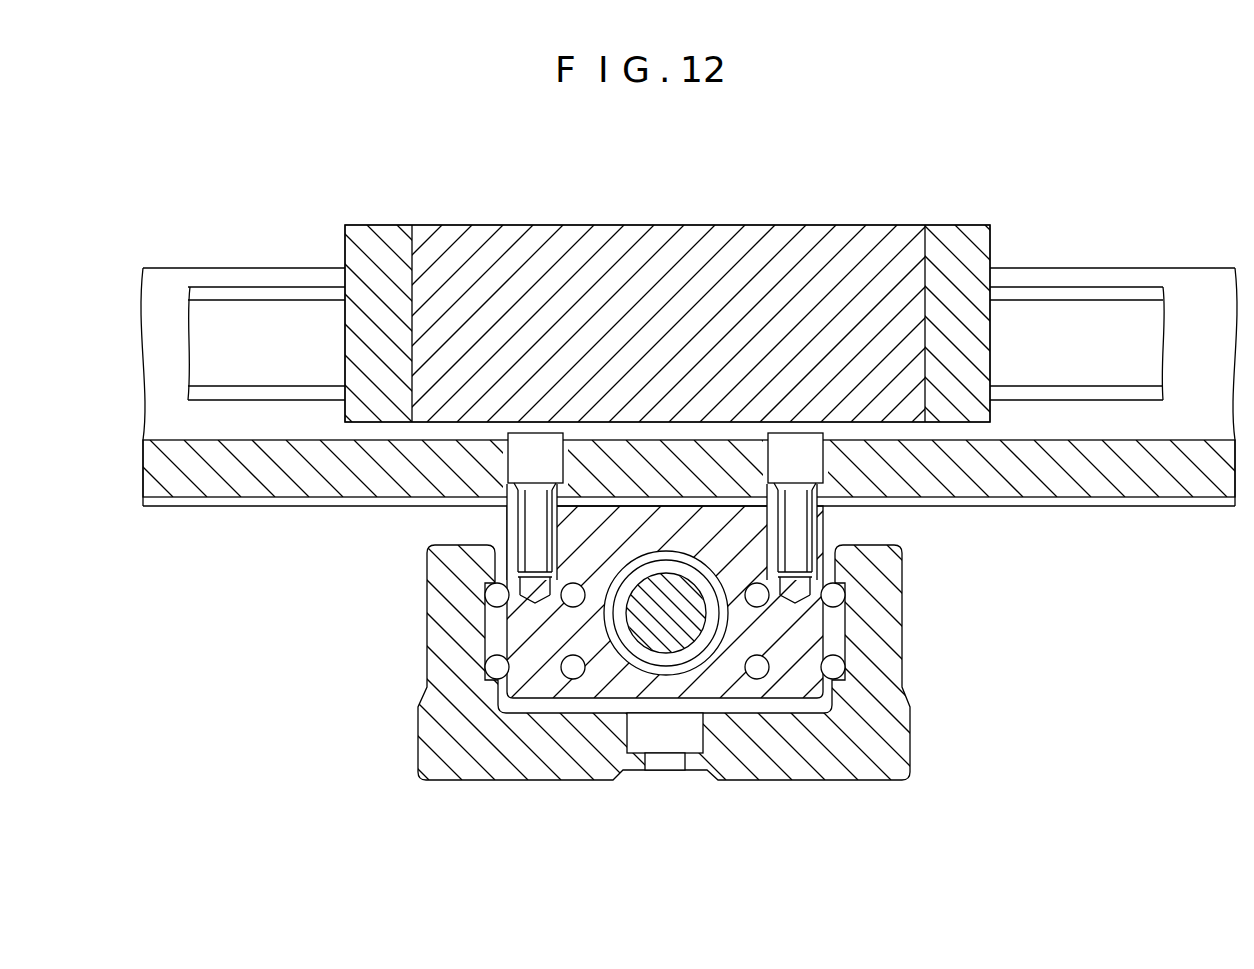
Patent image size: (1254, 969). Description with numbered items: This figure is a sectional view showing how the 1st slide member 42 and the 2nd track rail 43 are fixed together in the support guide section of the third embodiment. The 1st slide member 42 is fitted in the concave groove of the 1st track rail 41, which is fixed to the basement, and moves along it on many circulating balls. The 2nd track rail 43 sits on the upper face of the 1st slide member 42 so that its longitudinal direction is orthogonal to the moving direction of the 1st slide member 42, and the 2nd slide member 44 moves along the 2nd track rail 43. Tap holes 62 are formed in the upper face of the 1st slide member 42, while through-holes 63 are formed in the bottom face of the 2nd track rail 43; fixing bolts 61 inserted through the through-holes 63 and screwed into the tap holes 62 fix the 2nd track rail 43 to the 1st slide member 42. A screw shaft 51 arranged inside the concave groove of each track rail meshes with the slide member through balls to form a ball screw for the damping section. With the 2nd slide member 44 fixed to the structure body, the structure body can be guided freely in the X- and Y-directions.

The 1st track rail 41 is at (495, 760).
The 1st slide member 42 is at (655, 693).
The 2nd track rail 43 is at (1142, 472).
The 2nd slide member 44 is at (707, 247).
The screw shaft 51 is at (1078, 325).
The fixing bolts 61 is at (665, 427).
The tap holes 62 is at (542, 548).
The through-holes 63 is at (520, 468).